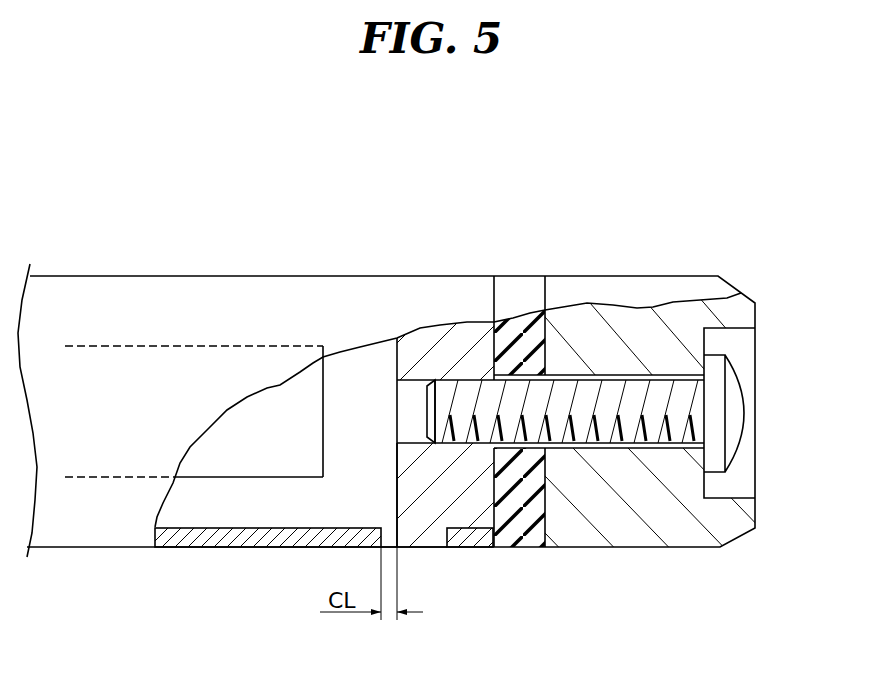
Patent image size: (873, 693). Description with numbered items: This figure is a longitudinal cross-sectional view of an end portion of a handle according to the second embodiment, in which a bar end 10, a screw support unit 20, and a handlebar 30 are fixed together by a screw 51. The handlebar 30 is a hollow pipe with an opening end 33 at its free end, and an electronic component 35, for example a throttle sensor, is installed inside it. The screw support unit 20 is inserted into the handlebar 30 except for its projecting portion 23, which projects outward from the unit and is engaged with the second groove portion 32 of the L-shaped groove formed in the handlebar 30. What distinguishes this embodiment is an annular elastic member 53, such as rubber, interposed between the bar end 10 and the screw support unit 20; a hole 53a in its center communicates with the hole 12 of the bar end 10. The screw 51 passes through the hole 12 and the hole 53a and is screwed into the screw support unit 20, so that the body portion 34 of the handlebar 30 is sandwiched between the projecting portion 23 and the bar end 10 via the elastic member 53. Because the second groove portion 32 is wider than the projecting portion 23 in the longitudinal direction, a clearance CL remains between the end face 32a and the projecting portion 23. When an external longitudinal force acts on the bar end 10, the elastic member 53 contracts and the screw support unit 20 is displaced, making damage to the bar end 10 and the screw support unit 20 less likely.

The bar end 10 is at (386, 439).
The hole 12 is at (640, 373).
The screw support unit 20 is at (448, 378).
The projecting portion 23 is at (425, 600).
The handlebar 30 is at (268, 570).
The second groove portion 32 is at (389, 495).
The end face 32a is at (347, 522).
The opening end 33 is at (502, 554).
The body portion 34 is at (470, 570).
The electronic component 35 is at (213, 343).
The screw 51 is at (761, 413).
The elastic member 53 is at (520, 530).
The hole 53a is at (537, 373).